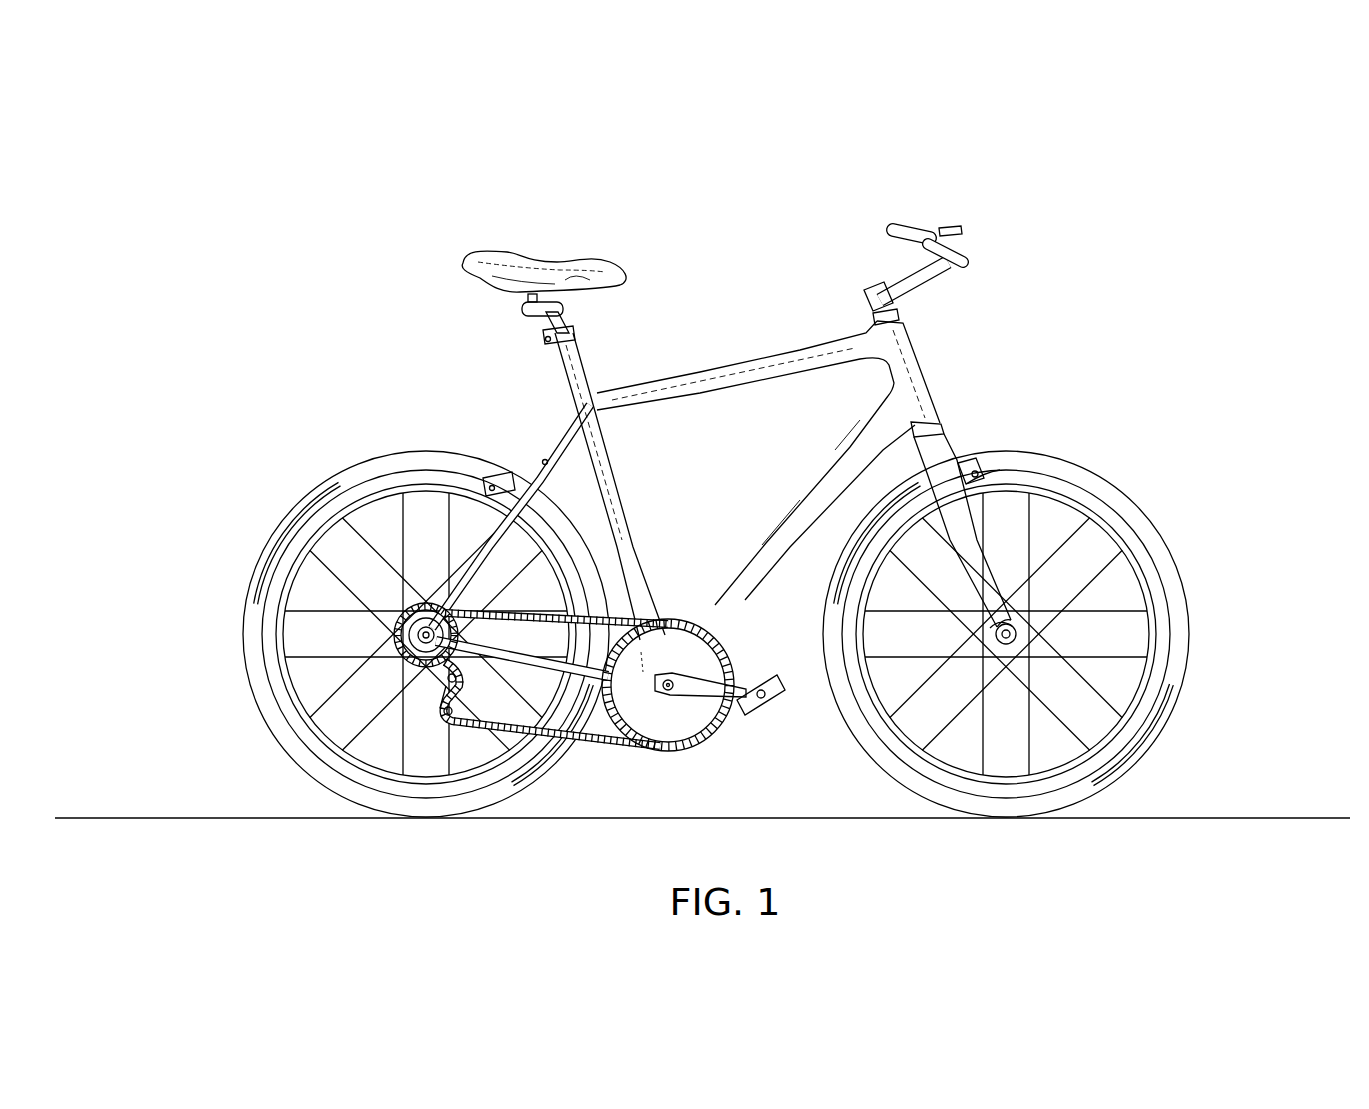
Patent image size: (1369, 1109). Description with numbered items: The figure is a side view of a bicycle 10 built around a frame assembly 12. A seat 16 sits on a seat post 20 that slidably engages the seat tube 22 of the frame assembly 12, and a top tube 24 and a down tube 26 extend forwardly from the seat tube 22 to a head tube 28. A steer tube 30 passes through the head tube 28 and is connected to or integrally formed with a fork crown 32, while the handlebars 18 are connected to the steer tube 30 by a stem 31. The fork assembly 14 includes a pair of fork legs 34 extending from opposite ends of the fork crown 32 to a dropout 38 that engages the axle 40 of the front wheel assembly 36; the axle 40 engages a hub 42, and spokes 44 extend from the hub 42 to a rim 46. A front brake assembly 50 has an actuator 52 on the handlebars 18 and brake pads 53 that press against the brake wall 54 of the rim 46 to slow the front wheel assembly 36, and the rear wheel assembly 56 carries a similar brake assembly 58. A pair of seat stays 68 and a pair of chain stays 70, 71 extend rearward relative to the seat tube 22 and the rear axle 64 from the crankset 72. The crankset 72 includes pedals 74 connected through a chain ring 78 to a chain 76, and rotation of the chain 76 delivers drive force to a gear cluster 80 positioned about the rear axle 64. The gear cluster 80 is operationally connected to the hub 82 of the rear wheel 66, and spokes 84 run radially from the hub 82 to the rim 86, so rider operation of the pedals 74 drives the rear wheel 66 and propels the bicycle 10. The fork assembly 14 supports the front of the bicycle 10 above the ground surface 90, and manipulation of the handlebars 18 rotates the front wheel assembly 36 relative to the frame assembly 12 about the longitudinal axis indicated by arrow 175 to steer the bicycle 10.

The bicycle 10 is at (899, 153).
The frame assembly 12 is at (705, 505).
The fork assembly 14 is at (1005, 495).
The seat 16 is at (557, 260).
The handlebars 18 is at (918, 225).
The seat post 20 is at (563, 313).
The seat tube 22 is at (560, 372).
The top tube 24 is at (724, 378).
The down tube 26 is at (800, 503).
The head tube 28 is at (922, 363).
The steer tube 30 is at (900, 312).
The stem 31 is at (893, 277).
The fork crown 32 is at (950, 447).
The fork legs 34 is at (980, 560).
The front wheel assembly 36 is at (1046, 624).
The dropout 38 is at (1035, 636).
The axle 40 is at (1005, 660).
The hub 42 is at (985, 642).
The spokes 44 is at (1135, 686).
The rim 46 is at (1170, 618).
The front brake assembly 50 is at (985, 462).
The actuator 52 is at (963, 232).
The brake pads 53 is at (1000, 470).
The brake wall 54 is at (1100, 508).
The rear wheel assembly 56 is at (395, 613).
The brake assembly 58 is at (496, 443).
The rear axle 64 is at (425, 605).
The rear wheel 66 is at (255, 607).
The seat stays 68 is at (528, 478).
The chain stay 70 is at (508, 668).
The chain stay 71 is at (511, 600).
The crankset 72 is at (673, 577).
The pedals 74 is at (771, 674).
The chain 76 is at (600, 750).
The chain ring 78 is at (683, 752).
The gear cluster 80 is at (385, 626).
The hub 82 is at (405, 660).
The spokes 84 is at (300, 703).
The rim 86 is at (258, 630).
The ground surface 90 is at (1275, 815).
The arrow indicating longitudinal axis 175 is at (1298, 520).